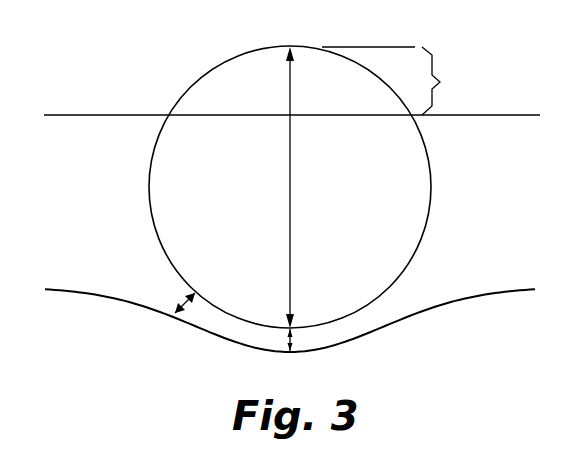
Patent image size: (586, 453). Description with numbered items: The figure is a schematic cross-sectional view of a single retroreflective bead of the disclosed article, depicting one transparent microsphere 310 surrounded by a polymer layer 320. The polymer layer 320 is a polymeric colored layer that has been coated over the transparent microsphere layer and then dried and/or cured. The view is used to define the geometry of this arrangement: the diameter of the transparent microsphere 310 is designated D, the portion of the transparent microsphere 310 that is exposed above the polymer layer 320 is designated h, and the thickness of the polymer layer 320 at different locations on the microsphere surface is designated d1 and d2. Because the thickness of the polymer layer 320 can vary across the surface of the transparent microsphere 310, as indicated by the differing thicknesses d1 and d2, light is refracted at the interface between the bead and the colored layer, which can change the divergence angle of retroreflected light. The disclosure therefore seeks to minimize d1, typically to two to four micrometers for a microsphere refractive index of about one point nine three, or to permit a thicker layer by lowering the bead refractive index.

The transparent microsphere 310 is at (218, 80).
The polymer layer 320 is at (99, 131).
The diameter of the transparent microsphere D is at (290, 166).
The exposed area of the transparent microsphere h is at (390, 81).
The polymer thickness at first location d1 is at (293, 341).
The polymer thickness at second location d2 is at (178, 299).